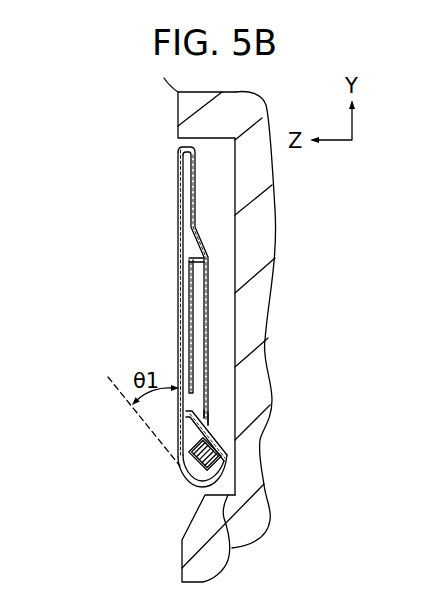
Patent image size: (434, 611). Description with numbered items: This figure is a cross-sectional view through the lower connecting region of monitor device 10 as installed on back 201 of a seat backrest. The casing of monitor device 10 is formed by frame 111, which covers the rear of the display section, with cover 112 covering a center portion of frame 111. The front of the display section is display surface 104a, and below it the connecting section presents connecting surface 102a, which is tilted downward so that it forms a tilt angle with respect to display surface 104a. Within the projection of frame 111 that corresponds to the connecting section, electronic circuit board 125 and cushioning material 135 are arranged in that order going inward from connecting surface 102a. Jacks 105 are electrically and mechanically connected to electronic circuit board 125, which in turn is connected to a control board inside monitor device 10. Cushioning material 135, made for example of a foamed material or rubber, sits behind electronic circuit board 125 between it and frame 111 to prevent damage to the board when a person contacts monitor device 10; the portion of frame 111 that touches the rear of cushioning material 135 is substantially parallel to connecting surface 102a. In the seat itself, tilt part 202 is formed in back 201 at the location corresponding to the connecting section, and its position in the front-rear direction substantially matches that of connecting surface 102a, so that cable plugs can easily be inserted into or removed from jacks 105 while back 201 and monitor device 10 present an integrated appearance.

The monitor device 10 is at (138, 157).
The back of backrest of seat 201 is at (179, 104).
The tilt part 202 is at (195, 513).
The display surface 104a is at (145, 324).
The connecting surface 102a is at (179, 473).
The jacks 105 is at (199, 483).
The cover 112 is at (197, 307).
The frame 111 is at (213, 417).
The cushioning material 135 is at (226, 471).
The electronic circuit board 125 is at (224, 540).